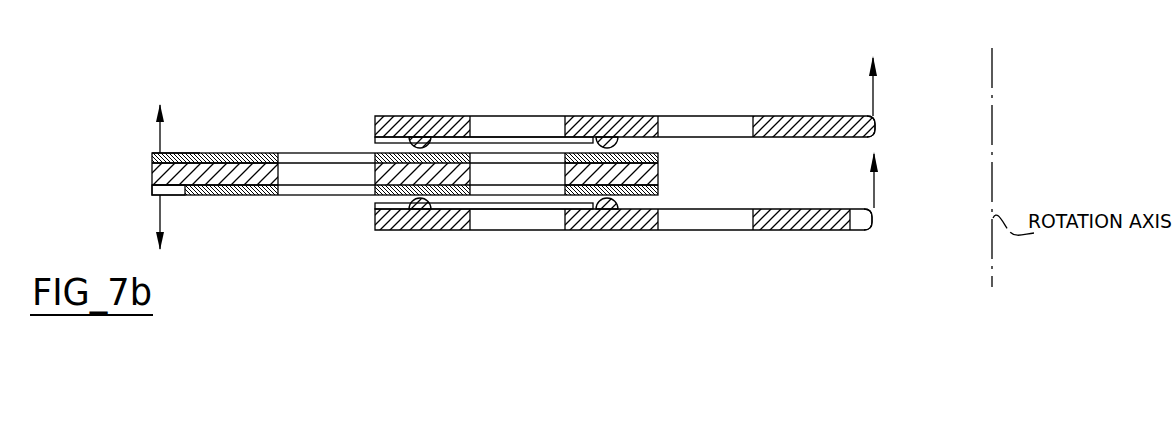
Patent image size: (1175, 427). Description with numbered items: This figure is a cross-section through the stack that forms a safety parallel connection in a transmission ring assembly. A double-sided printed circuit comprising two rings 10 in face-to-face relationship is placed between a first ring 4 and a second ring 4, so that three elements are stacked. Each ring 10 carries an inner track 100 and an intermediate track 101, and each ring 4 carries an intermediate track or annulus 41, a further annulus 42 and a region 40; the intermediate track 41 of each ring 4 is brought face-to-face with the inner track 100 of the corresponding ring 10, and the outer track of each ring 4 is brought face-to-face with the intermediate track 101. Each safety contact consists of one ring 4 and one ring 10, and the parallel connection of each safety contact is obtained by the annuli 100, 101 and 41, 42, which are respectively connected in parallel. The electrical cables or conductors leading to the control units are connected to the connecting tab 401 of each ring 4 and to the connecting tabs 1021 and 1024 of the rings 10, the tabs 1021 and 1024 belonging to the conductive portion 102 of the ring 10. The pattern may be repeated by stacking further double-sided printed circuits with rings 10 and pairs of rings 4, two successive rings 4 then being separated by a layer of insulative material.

The ring 4 is at (524, 101).
The contact pad 40 is at (777, 115).
The connecting tab 401 is at (878, 118).
The intermediate track or annulus 41 is at (594, 115).
The annulus 42 is at (416, 115).
The ring 10 is at (233, 137).
The inner track 100 is at (660, 155).
The intermediate track 101 is at (374, 146).
The conductive coating 102 is at (254, 152).
The connecting tab 1021 is at (177, 152).
The connecting tab 1024 is at (183, 196).